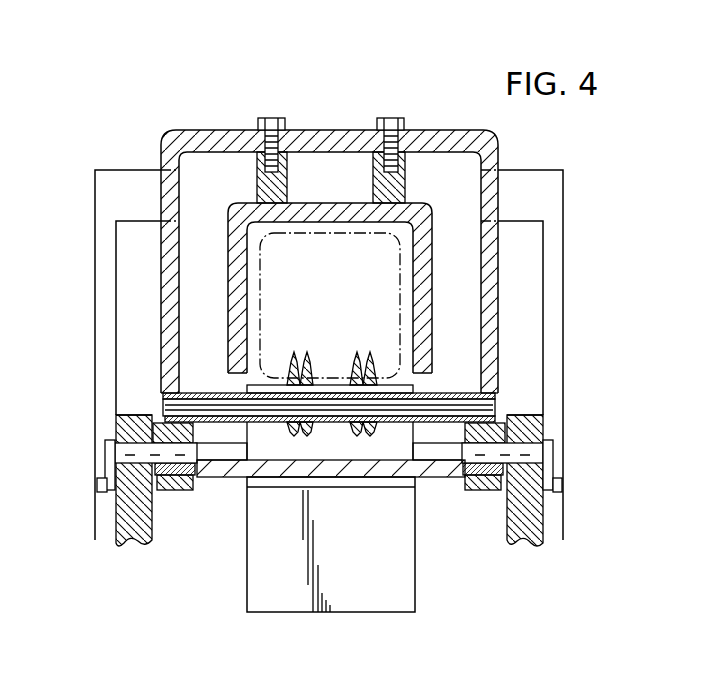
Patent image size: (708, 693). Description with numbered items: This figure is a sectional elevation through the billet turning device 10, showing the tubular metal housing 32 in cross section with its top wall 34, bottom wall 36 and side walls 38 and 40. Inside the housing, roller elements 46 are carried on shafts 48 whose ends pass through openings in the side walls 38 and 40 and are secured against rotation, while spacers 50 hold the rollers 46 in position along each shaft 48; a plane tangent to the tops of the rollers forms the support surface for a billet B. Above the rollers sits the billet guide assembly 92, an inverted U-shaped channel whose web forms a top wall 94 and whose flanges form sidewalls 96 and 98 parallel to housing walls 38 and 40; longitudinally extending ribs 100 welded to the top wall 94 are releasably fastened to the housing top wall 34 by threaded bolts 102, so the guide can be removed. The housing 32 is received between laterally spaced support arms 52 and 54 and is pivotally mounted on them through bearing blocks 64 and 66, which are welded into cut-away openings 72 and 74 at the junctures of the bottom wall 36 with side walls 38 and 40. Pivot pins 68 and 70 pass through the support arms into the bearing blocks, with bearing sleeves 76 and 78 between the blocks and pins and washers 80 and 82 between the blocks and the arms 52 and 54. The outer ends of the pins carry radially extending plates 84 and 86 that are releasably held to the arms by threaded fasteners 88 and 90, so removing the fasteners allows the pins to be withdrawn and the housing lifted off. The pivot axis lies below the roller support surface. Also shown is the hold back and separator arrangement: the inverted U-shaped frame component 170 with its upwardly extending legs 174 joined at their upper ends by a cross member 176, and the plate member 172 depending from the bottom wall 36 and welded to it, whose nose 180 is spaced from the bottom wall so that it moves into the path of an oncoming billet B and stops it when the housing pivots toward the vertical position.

The billet turning device 10 is at (339, 43).
The housing 32 is at (350, 124).
The top wall 34 is at (430, 128).
The bottom wall 36 is at (290, 470).
The side wall 38 is at (168, 300).
The side wall 40 is at (495, 282).
The roller elements 46 is at (292, 380).
The shafts 48 is at (392, 415).
The spacers 50 is at (222, 395).
The support arm 52 is at (138, 545).
The support arm 54 is at (535, 545).
The bearing block 64 is at (172, 490).
The bearing block 66 is at (480, 488).
The pivot pin 68 is at (112, 430).
The pivot pin 70 is at (528, 446).
The opening 72 is at (205, 462).
The opening 74 is at (458, 467).
The bearing sleeve 76 is at (195, 468).
The bearing sleeve 78 is at (497, 490).
The washer 80 is at (161, 417).
The washer 82 is at (505, 423).
The radially extending plate 84 is at (105, 460).
The radially extending plate 86 is at (553, 466).
The threaded fastener 88 is at (97, 487).
The threaded fastener 90 is at (562, 487).
The billet guide assembly 92 is at (237, 197).
The top wall 94 is at (340, 205).
The sidewall 96 is at (238, 277).
The sidewall 98 is at (428, 300).
The ribs 100 is at (262, 190).
The threaded bolts 102 is at (276, 118).
The frame component 170 is at (547, 164).
The plate member 172 is at (373, 600).
The legs 174 is at (100, 312).
The cross member 176 is at (143, 186).
The nose 180 is at (290, 612).
The billet B is at (405, 252).